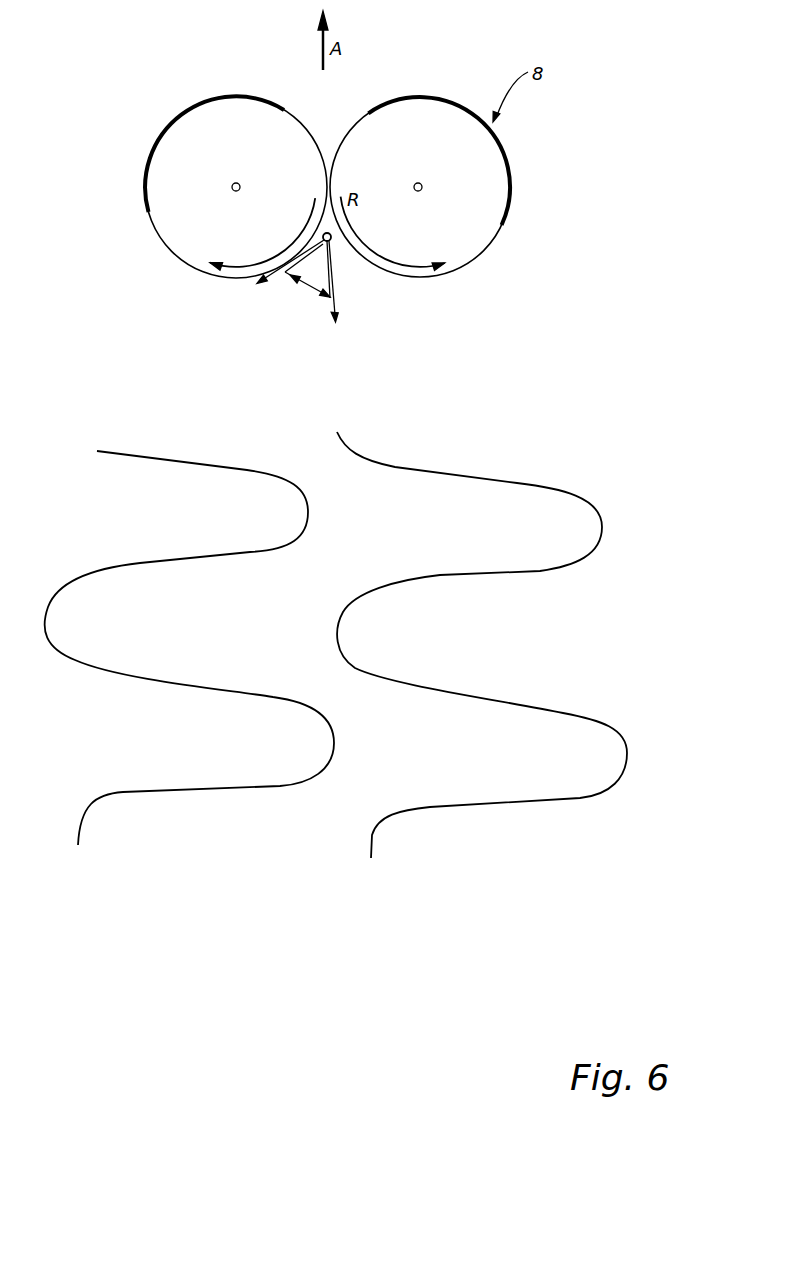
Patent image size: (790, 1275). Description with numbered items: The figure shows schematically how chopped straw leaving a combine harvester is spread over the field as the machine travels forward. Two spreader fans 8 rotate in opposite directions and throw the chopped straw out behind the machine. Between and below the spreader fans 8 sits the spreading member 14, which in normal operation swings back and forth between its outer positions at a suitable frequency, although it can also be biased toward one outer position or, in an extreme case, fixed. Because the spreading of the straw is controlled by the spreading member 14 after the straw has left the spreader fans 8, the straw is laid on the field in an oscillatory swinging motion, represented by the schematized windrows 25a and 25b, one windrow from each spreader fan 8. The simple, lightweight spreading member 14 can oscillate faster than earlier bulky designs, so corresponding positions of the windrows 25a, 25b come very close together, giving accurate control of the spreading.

The spreader fan 8 is at (158, 120).
The spreading member 14 is at (318, 262).
The windrow 25a is at (160, 460).
The windrow 25b is at (427, 468).